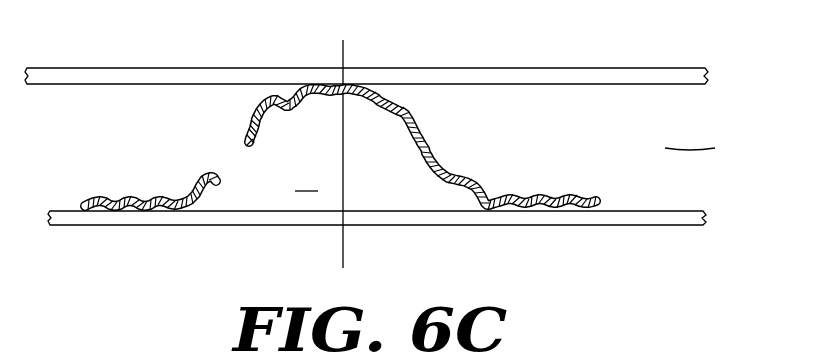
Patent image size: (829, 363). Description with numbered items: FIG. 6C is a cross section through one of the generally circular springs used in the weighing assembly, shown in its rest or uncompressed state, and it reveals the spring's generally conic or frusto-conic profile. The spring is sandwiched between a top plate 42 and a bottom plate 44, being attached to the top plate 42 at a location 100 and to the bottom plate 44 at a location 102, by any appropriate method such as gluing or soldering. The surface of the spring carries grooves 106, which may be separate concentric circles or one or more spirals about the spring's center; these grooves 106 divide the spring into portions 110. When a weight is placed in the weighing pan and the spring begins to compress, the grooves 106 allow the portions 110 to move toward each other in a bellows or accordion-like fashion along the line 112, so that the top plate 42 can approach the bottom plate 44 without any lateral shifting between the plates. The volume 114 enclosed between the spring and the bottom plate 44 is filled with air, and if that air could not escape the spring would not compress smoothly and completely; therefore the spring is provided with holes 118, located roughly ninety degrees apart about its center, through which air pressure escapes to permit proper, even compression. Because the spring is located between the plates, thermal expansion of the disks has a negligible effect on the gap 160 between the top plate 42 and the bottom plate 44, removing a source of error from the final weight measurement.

The top plate 42 is at (643, 76).
The bottom plate 44 is at (672, 216).
The attachment location on top plate 100 is at (357, 85).
The attachment location on bottom plate 102 is at (134, 214).
The grooves 106 is at (178, 198).
The portions of the spring 110 is at (272, 106).
The line of compression 112 is at (343, 52).
The volume 114 is at (310, 182).
The holes 118 is at (237, 156).
The gap 160 is at (709, 151).